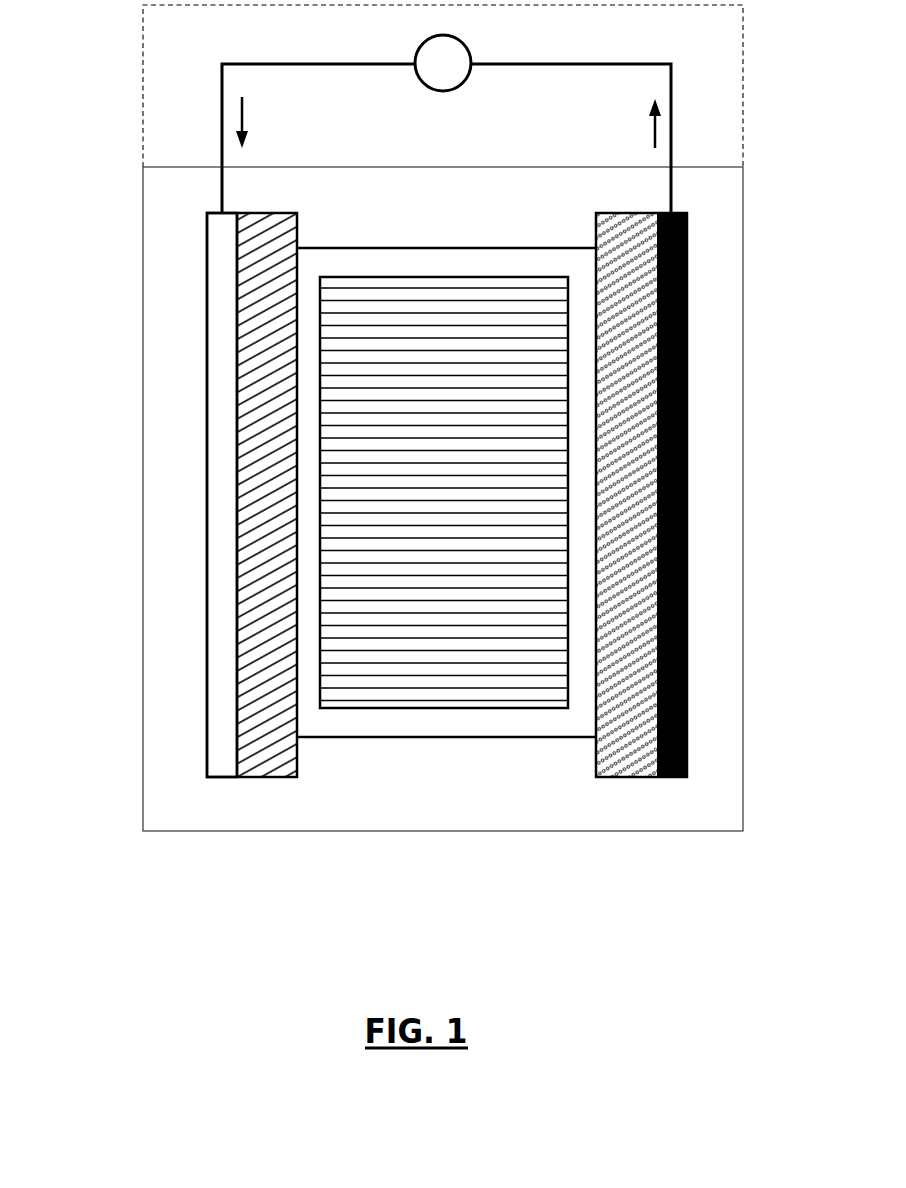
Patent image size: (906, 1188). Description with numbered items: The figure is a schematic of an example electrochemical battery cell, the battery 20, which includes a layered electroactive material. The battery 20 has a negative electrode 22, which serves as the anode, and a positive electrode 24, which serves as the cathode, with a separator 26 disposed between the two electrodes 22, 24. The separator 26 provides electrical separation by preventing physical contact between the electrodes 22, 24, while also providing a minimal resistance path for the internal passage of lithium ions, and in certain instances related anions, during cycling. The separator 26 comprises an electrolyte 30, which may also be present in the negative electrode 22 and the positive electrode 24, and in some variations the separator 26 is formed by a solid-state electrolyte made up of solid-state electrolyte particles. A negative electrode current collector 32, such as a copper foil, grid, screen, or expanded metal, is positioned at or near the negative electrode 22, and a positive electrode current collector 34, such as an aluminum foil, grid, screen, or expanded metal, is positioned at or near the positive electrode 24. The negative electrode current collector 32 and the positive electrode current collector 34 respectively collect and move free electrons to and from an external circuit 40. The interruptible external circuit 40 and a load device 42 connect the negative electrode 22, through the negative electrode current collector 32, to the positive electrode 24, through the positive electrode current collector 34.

The battery 20 is at (138, 248).
The negative electrode 22 is at (627, 777).
The positive electrode 24 is at (260, 777).
The separator 26 is at (446, 737).
The electrolyte 30 is at (444, 492).
The negative electrode current collector 32 is at (686, 494).
The positive electrode current collector 34 is at (207, 494).
The external circuit 40 is at (138, 83).
The load device 42 is at (443, 63).